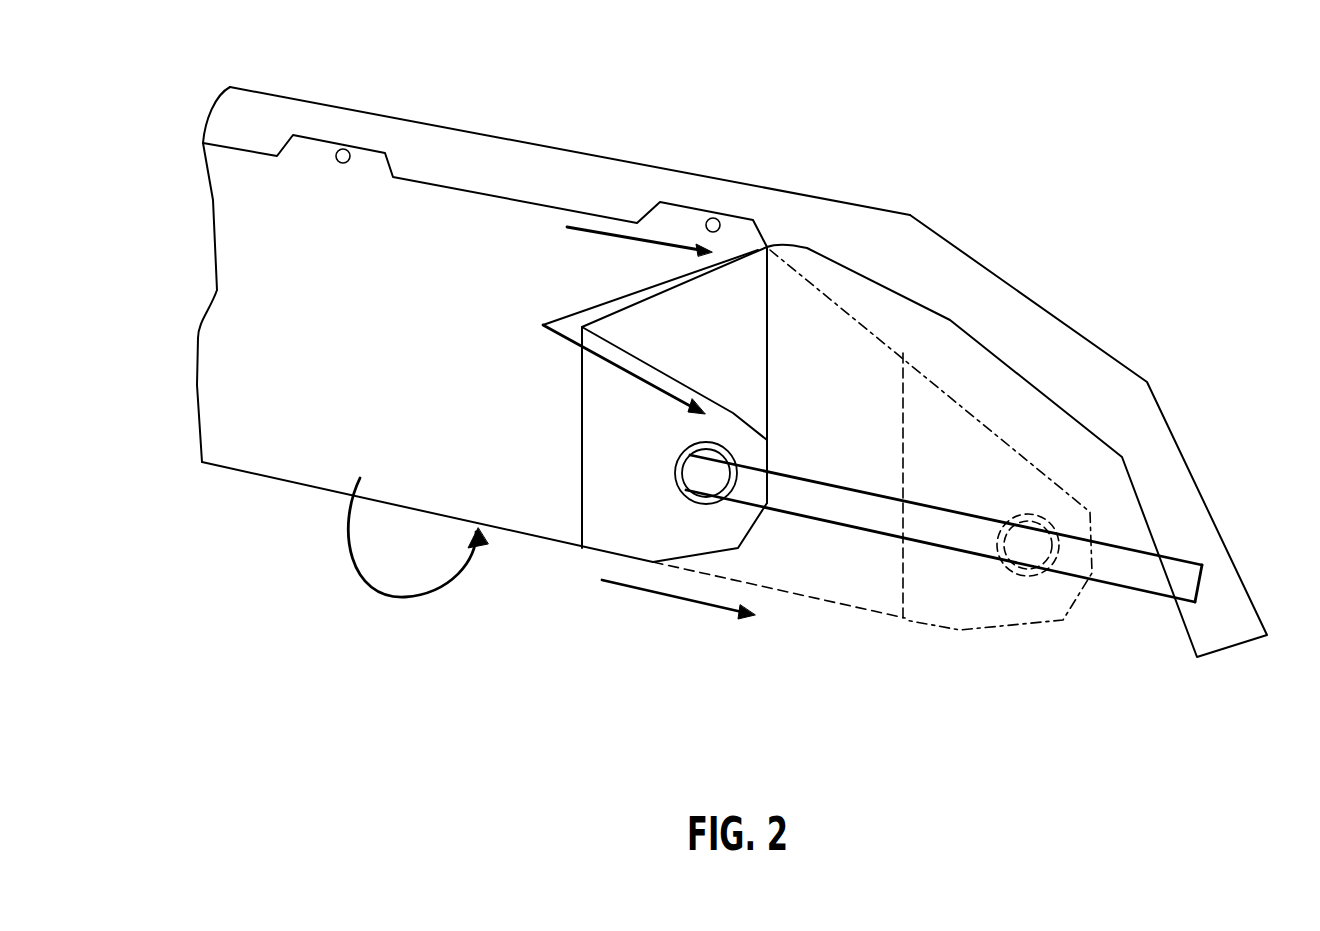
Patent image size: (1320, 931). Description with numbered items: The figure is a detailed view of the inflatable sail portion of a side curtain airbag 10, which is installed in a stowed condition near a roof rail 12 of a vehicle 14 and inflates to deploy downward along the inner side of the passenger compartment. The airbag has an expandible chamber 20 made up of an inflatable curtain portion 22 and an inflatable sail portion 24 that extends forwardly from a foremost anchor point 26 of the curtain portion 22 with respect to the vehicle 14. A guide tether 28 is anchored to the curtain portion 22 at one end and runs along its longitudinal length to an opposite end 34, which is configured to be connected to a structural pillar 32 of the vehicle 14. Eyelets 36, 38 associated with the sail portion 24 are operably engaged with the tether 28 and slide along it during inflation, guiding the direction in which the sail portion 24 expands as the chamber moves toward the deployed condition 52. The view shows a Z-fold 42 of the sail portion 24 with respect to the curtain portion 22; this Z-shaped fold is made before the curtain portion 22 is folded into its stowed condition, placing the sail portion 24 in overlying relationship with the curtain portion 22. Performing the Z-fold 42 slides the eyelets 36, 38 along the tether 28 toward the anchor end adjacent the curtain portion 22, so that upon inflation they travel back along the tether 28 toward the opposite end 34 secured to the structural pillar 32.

The side curtain airbag 10 is at (430, 183).
The roof rail 12 is at (507, 155).
The vehicle 14 is at (277, 96).
The expandible chamber 20 is at (515, 247).
The curtain portion 22 is at (265, 443).
The sail portion 24 is at (622, 522).
The foremost anchor point 26 is at (702, 216).
The tether 28 is at (843, 525).
The structural pillar 32 is at (1158, 437).
The opposite end 34 is at (1187, 583).
The eyelet 36 is at (1042, 580).
The eyelet 38 is at (705, 505).
The Z-fold 42 is at (740, 325).
The deployed condition 52 is at (980, 410).